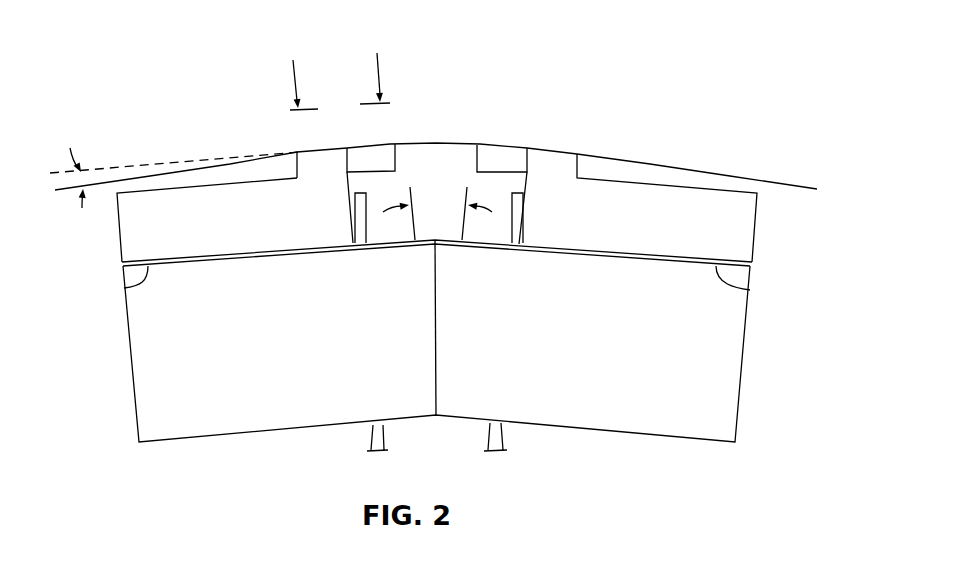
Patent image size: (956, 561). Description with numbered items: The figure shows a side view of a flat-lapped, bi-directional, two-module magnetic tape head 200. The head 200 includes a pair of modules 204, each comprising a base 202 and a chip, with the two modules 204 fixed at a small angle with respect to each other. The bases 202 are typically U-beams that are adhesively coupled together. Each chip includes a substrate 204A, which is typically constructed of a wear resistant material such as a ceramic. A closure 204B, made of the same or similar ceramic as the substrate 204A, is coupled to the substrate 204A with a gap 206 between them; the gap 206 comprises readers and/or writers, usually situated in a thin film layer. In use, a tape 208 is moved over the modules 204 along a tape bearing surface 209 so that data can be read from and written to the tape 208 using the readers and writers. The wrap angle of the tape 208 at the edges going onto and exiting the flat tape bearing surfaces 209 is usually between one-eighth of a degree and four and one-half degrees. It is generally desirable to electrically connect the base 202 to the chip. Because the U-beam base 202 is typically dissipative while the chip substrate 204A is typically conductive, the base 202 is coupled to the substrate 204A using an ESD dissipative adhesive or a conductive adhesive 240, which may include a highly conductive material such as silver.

The magnetic tape head 200 is at (174, 117).
The base 202 is at (128, 333).
The module 204 is at (119, 237).
The substrate 204A is at (180, 215).
The closure 204B is at (478, 162).
The gap 206 is at (348, 150).
The tape 208 is at (670, 168).
The tape bearing surface 209 is at (302, 151).
The conductive adhesive 240 is at (124, 288).